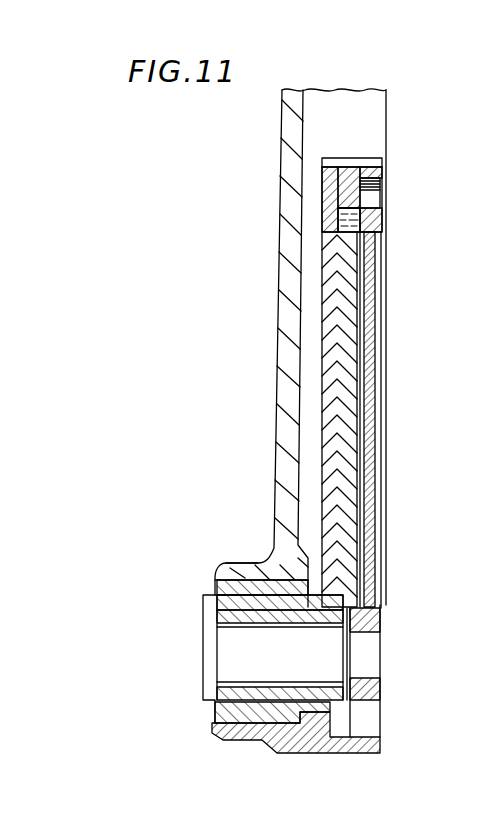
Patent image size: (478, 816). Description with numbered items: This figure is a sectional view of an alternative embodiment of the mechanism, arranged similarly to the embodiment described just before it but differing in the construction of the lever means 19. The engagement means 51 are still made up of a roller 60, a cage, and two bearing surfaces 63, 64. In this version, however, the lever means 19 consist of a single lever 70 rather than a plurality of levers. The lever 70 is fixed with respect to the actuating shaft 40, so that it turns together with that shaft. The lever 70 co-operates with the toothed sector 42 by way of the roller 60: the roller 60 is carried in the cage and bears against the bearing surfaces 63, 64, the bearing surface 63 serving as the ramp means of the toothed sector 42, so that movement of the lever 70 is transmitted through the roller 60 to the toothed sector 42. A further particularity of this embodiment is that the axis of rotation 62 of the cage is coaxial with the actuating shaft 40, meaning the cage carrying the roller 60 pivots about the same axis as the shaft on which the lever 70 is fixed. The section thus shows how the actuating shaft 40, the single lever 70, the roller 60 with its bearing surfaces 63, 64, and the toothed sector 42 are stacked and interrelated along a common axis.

The lever means 19 is at (388, 431).
The actuating shaft 40 is at (205, 635).
The toothed sector 42 is at (333, 158).
The engagement means 51 is at (386, 201).
The roller 60 is at (339, 215).
The axis of rotation 62 is at (383, 625).
The bearing surface 63 is at (350, 207).
The bearing surface 64 is at (339, 228).
The lever 70 is at (362, 370).